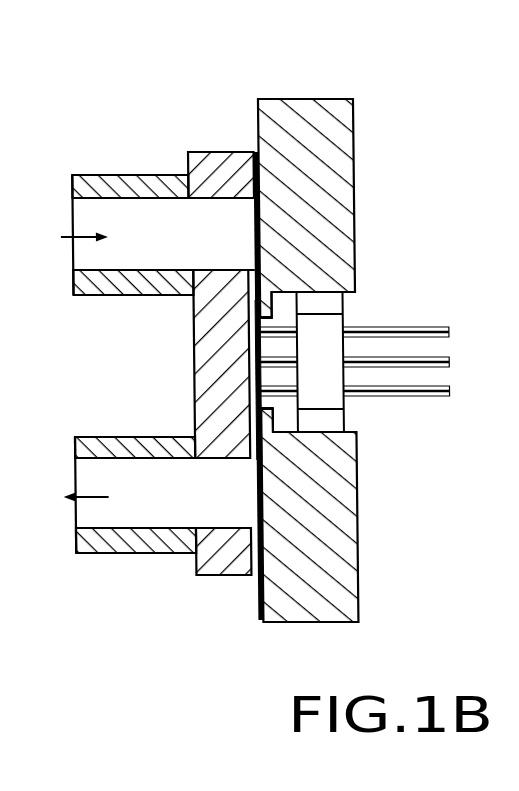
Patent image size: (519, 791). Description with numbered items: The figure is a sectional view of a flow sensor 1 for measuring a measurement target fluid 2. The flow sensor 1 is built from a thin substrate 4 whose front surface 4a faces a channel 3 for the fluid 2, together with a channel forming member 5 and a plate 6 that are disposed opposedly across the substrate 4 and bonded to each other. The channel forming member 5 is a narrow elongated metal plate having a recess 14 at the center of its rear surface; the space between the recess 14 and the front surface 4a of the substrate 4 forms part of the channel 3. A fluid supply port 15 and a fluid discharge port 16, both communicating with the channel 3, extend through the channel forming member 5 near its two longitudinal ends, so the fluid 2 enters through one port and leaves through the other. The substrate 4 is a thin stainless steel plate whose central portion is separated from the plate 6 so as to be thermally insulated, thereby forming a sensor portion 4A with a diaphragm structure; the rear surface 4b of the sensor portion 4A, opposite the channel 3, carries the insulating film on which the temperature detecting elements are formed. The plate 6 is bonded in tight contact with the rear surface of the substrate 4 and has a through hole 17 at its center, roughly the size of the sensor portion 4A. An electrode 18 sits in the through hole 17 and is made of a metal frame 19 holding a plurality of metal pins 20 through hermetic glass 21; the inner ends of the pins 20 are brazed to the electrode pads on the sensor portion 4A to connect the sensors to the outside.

The flow sensor 1 is at (365, 48).
The measurement target fluid 2 is at (84, 239).
The channel 3 is at (253, 333).
The substrate 4 is at (256, 548).
The sensor portion 4A is at (253, 375).
The front surface 4a is at (215, 562).
The rear surface 4b is at (259, 348).
The channel forming member 5 is at (220, 152).
The plate 6 is at (354, 132).
The recess 14 is at (257, 274).
The fluid supply port 15 is at (157, 271).
The fluid discharge port 16 is at (131, 460).
The through hole 17 is at (332, 327).
The electrode 18 is at (349, 410).
The metal frame 19 is at (327, 432).
The metal pins 20 is at (447, 391).
The hermetic glass 21 is at (343, 323).